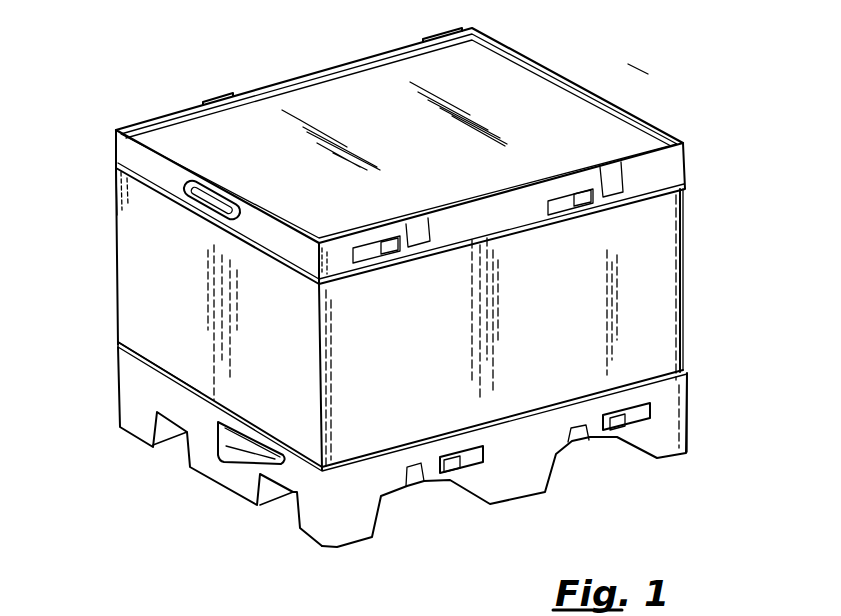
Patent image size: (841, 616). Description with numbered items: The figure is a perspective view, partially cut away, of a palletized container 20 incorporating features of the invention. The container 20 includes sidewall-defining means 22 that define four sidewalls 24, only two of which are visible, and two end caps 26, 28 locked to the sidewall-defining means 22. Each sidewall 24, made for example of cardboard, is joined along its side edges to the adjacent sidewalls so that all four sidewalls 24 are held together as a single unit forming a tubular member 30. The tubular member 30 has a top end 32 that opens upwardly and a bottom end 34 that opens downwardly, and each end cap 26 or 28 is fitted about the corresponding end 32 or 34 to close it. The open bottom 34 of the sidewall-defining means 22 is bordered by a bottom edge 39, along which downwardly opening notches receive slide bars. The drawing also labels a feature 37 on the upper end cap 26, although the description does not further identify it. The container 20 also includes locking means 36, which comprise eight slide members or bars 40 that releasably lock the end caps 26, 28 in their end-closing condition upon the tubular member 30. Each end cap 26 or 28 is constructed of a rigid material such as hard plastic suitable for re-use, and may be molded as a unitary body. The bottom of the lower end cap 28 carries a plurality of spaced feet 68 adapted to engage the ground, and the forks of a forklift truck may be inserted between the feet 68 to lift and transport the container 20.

The palletized container 20 is at (579, 75).
The sidewall-defining means 22 is at (111, 253).
The sidewalls 24 is at (665, 290).
The end cap 26 is at (690, 156).
The end cap 28 is at (686, 430).
The tubular member 30 is at (666, 247).
The top end 32 is at (133, 190).
The bottom end 34 is at (128, 338).
The locking means 36 is at (693, 402).
The handle 37 is at (212, 200).
The bottom edge 39 is at (197, 460).
The slide bars 40 is at (470, 450).
The feet 68 is at (133, 420).